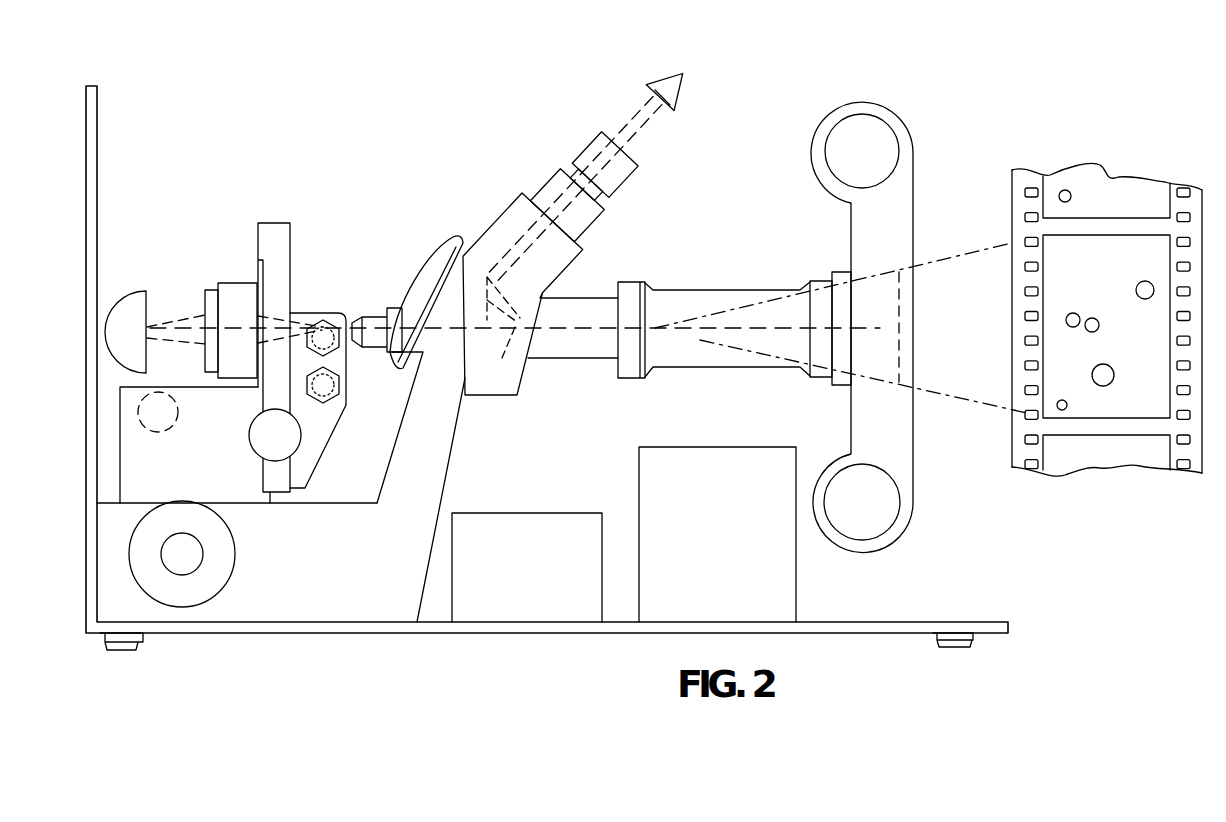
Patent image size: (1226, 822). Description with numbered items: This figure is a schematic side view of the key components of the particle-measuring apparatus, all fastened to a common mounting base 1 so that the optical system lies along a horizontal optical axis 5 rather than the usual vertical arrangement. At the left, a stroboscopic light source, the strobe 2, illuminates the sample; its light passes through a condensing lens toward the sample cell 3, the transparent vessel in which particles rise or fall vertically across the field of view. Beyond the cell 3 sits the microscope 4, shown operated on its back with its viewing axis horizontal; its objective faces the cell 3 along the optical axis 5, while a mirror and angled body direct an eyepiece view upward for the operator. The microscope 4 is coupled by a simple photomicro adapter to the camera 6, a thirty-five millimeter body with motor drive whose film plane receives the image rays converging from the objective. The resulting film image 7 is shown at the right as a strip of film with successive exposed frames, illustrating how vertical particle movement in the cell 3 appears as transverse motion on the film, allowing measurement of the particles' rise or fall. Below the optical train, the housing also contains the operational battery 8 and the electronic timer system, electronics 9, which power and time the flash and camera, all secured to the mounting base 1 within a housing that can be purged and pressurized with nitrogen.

The mounting base 1 is at (455, 642).
The strobe 2 is at (144, 294).
The cell 3 is at (334, 323).
The microscope 4 is at (675, 289).
The optical axis 5 is at (588, 328).
The camera 6 is at (927, 160).
The film image 7 is at (1114, 409).
The battery 8 is at (527, 567).
The electronics 9 is at (717, 534).